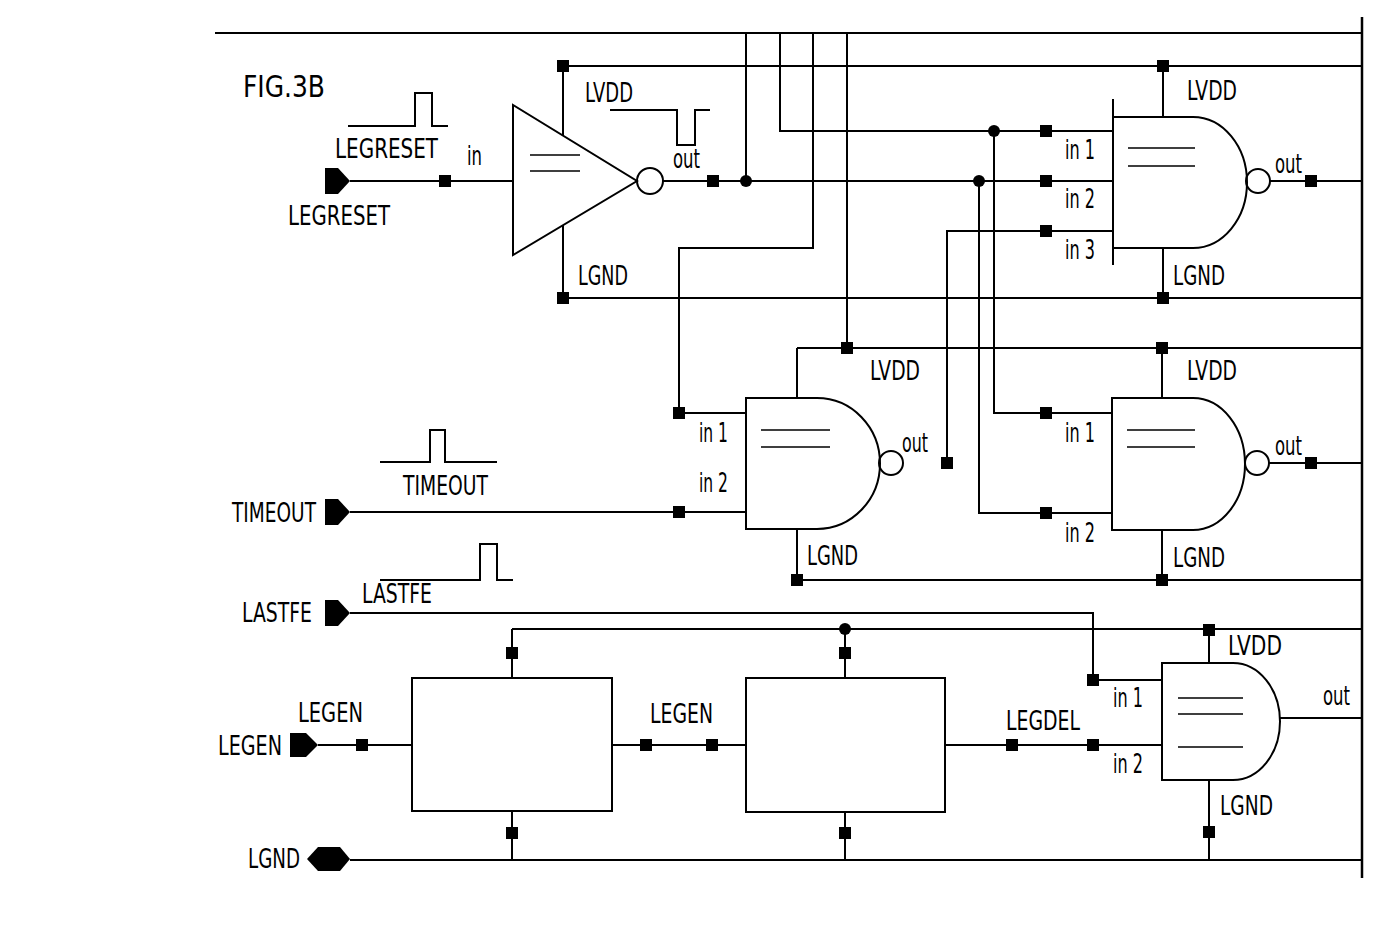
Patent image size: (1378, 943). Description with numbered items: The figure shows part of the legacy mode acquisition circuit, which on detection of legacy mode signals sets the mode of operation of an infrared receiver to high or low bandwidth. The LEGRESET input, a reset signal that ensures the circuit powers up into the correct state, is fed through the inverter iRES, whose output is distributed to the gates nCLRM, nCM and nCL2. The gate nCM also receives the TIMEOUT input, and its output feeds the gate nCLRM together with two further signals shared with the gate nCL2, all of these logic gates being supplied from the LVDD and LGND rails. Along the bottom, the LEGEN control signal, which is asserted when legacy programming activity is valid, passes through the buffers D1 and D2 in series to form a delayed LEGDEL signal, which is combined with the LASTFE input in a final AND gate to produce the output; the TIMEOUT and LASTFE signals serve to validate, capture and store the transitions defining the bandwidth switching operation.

The reset inverter iRES is at (588, 180).
The three-input NAND gate nCLRM is at (1191, 182).
The two-input NAND gate nCM is at (824, 463).
The two-input NAND gate nCL2 is at (1190, 464).
The bsif98 delay buffer D1 is at (512, 744).
The bsif98 delay buffer D2 is at (845, 745).